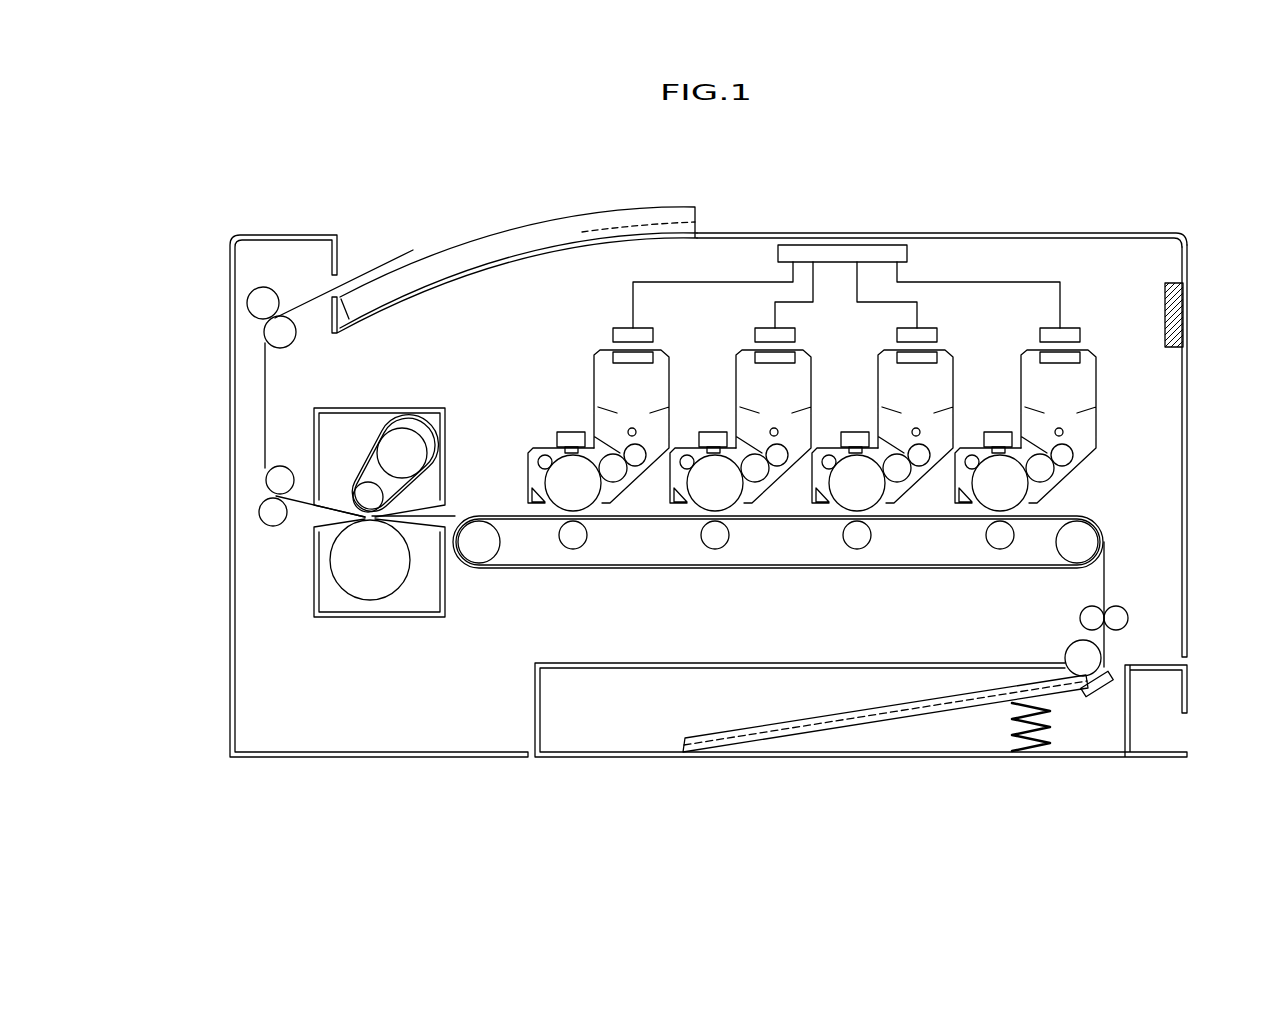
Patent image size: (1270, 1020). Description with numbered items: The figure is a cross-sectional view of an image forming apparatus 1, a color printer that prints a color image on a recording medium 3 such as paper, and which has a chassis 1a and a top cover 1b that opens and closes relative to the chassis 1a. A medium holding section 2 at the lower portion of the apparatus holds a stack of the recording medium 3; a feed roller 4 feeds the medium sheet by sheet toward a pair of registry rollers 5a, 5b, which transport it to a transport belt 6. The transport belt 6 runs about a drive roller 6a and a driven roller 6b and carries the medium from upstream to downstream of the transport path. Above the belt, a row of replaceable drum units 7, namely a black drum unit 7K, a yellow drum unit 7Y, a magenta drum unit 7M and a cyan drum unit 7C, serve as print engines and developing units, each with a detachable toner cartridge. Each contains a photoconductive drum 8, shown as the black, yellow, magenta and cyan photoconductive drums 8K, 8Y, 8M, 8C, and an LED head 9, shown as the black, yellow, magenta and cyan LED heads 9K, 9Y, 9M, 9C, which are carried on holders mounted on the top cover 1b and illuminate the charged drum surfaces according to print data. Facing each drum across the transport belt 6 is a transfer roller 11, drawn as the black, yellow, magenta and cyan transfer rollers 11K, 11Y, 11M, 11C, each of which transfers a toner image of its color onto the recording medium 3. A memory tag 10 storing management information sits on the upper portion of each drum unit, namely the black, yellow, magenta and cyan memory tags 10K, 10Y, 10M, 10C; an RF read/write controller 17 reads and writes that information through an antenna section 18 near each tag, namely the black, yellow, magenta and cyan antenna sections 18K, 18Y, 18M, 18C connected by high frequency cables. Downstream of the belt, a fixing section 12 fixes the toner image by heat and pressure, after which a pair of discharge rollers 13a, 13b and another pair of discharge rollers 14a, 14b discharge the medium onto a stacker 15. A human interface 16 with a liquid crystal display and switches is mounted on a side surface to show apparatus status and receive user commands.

The image forming apparatus 1 is at (1040, 155).
The chassis 1a is at (1188, 373).
The top cover 1b is at (1088, 232).
The medium holding section 2 is at (966, 758).
The recording medium 3 is at (712, 735).
The feed roller 4 is at (1072, 645).
The registry roller 5a is at (1097, 606).
The registry roller 5b is at (1126, 610).
The transport belt 6 is at (801, 544).
The drive roller 6a is at (1088, 532).
The driven roller 6b is at (483, 555).
The drum unit 7 is at (1029, 419).
The cyan drum unit 7C is at (598, 378).
The magenta drum unit 7M is at (740, 378).
The yellow drum unit 7Y is at (890, 382).
The black drum unit 7K is at (1027, 385).
The photoconductive drum 8 is at (987, 498).
The cyan photoconductive drum 8C is at (535, 477).
The magenta photoconductive drum 8M is at (677, 477).
The yellow photoconductive drum 8Y is at (814, 478).
The black photoconductive drum 8K is at (968, 480).
The LED head 9 is at (987, 419).
The cyan LED head 9C is at (572, 432).
The magenta LED head 9M is at (714, 432).
The yellow LED head 9Y is at (852, 430).
The black LED head 9K is at (998, 430).
The memory tag 10 is at (1101, 334).
The cyan memory tag 10C is at (653, 358).
The magenta memory tag 10M is at (797, 358).
The yellow memory tag 10Y is at (939, 358).
The black memory tag 10K is at (1080, 357).
The transfer roller 11 is at (989, 569).
The cyan transfer roller 11C is at (572, 550).
The magenta transfer roller 11M is at (714, 550).
The yellow transfer roller 11Y is at (856, 550).
The black transfer roller 11K is at (990, 548).
The fixing section 12 is at (358, 617).
The discharge roller 13a is at (266, 485).
The discharge roller 13b is at (260, 515).
The discharge roller 14a is at (248, 306).
The discharge roller 14b is at (264, 333).
The stacker 15 is at (383, 222).
The human interface 16 is at (1188, 302).
The RF read/write controller 17 is at (866, 245).
The antenna section 18 is at (1020, 293).
The cyan antenna section 18C is at (630, 328).
The magenta antenna section 18M is at (772, 328).
The yellow antenna section 18Y is at (923, 327).
The black antenna section 18K is at (1070, 328).